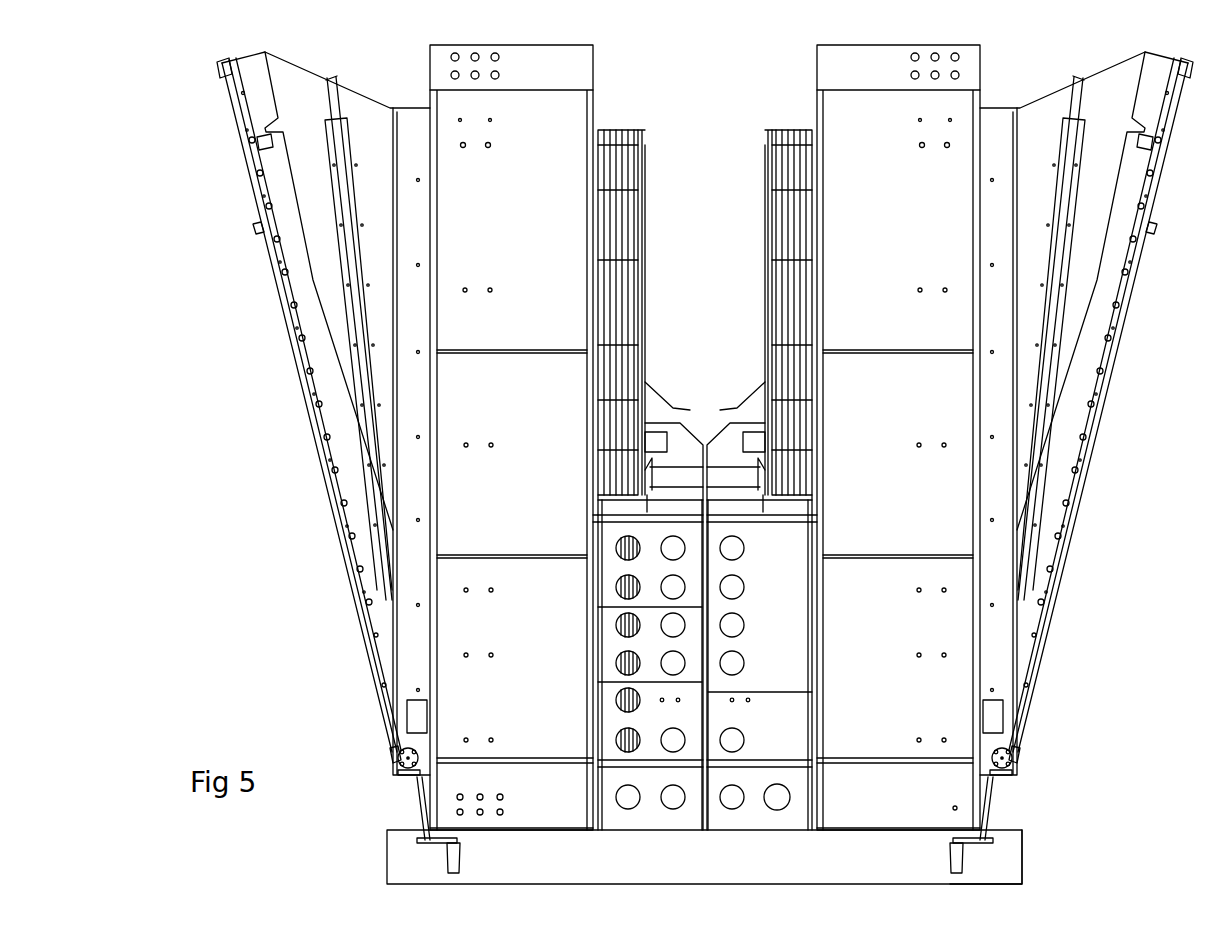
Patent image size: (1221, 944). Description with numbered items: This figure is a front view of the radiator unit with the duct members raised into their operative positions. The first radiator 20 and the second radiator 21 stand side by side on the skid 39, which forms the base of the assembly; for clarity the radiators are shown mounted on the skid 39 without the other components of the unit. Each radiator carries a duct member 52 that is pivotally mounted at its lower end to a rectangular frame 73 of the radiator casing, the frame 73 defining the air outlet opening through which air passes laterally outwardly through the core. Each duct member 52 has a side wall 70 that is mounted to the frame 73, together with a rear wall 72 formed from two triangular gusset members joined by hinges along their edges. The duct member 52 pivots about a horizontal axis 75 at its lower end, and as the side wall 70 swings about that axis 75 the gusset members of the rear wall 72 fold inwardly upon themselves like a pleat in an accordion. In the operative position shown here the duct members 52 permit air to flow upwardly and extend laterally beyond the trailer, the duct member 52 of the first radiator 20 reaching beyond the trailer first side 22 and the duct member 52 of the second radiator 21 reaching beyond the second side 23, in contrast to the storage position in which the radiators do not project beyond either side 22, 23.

The first radiator 20 is at (1117, 574).
The second radiator 21 is at (240, 556).
The trailer first side 22 is at (1022, 850).
The trailer second side 23 is at (385, 867).
The skid 39 is at (385, 845).
The duct member 52 is at (209, 117).
The side wall 70 is at (255, 188).
The rear wall 72 is at (312, 125).
The rectangular frame 73 is at (1048, 135).
The horizontal axis 75 is at (405, 761).